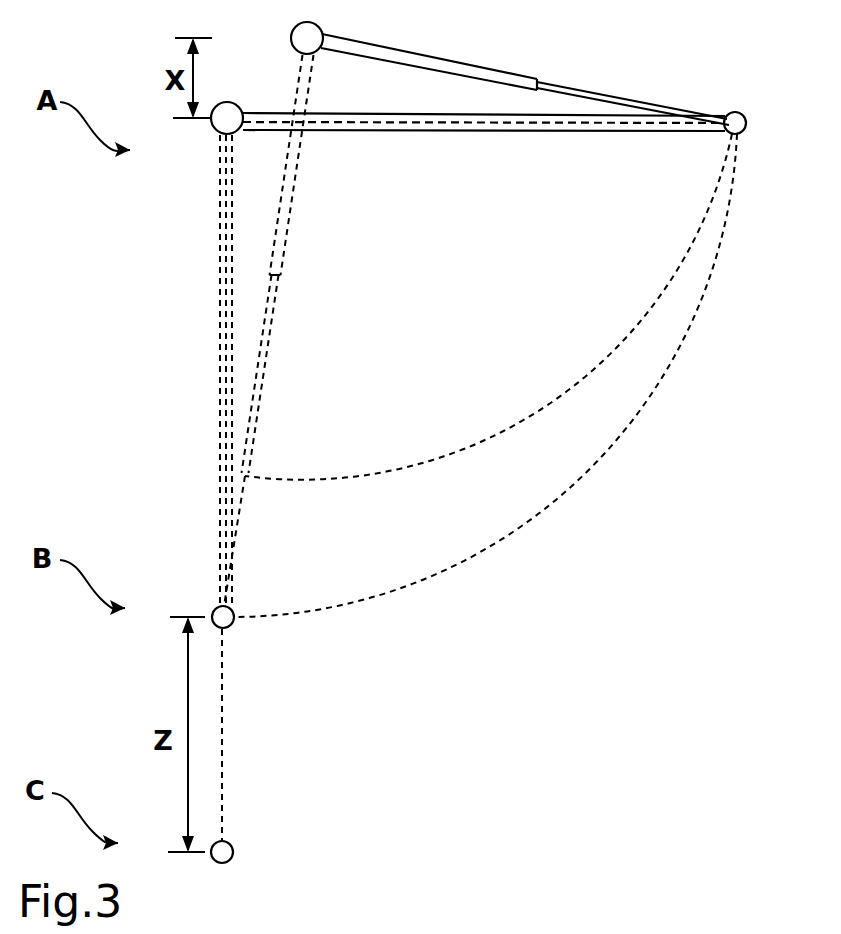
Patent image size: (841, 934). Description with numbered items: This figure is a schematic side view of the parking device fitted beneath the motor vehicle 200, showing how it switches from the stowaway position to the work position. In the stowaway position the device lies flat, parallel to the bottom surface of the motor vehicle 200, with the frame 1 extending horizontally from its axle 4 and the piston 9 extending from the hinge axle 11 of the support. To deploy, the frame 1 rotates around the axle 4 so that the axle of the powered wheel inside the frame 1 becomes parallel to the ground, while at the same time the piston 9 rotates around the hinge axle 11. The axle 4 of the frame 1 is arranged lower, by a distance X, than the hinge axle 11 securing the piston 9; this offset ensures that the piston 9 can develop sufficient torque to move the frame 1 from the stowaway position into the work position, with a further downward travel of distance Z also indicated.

The frame 1 is at (445, 130).
The axle 4 is at (222, 118).
The piston 9 is at (460, 68).
The hinge axle 11 is at (303, 41).
The motor vehicle 200 is at (572, 922).